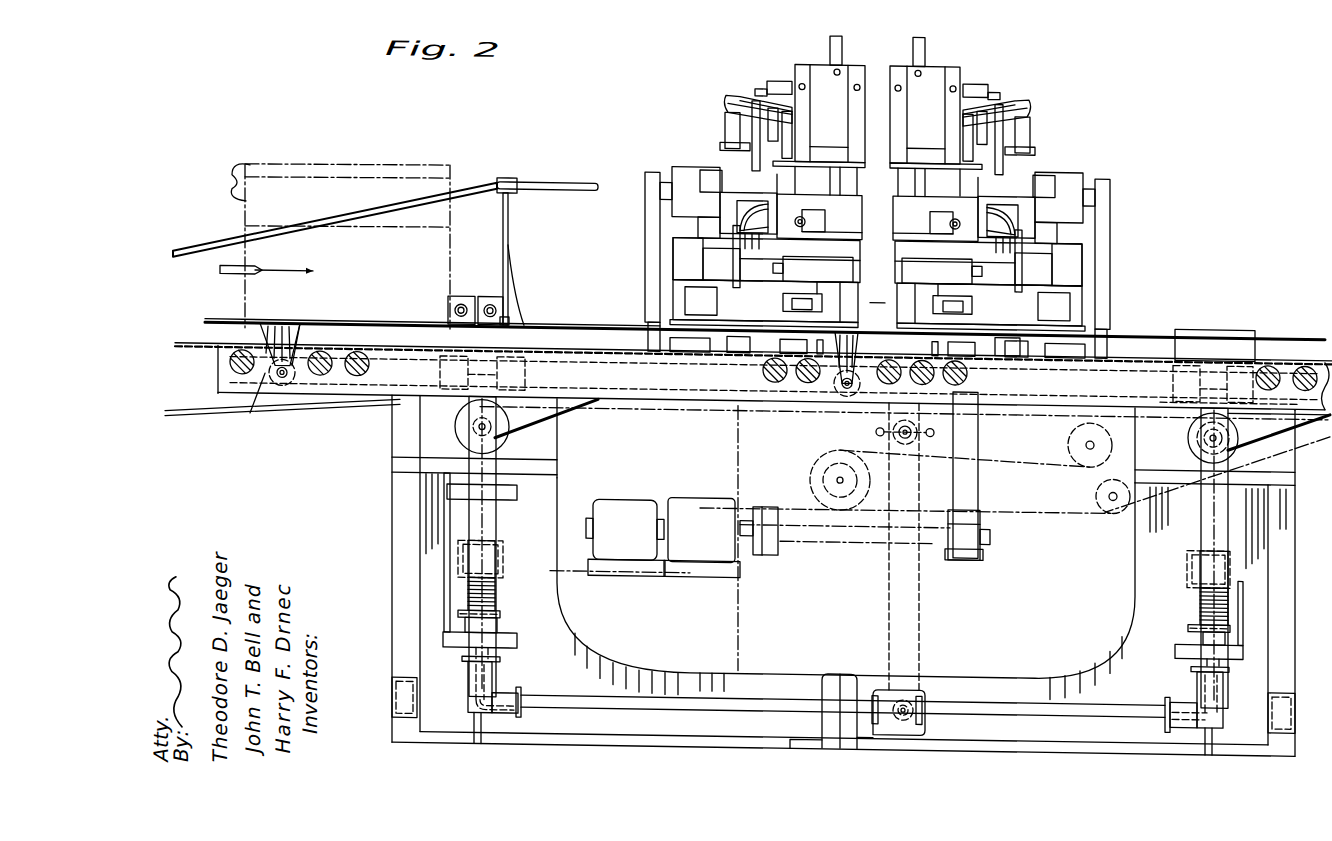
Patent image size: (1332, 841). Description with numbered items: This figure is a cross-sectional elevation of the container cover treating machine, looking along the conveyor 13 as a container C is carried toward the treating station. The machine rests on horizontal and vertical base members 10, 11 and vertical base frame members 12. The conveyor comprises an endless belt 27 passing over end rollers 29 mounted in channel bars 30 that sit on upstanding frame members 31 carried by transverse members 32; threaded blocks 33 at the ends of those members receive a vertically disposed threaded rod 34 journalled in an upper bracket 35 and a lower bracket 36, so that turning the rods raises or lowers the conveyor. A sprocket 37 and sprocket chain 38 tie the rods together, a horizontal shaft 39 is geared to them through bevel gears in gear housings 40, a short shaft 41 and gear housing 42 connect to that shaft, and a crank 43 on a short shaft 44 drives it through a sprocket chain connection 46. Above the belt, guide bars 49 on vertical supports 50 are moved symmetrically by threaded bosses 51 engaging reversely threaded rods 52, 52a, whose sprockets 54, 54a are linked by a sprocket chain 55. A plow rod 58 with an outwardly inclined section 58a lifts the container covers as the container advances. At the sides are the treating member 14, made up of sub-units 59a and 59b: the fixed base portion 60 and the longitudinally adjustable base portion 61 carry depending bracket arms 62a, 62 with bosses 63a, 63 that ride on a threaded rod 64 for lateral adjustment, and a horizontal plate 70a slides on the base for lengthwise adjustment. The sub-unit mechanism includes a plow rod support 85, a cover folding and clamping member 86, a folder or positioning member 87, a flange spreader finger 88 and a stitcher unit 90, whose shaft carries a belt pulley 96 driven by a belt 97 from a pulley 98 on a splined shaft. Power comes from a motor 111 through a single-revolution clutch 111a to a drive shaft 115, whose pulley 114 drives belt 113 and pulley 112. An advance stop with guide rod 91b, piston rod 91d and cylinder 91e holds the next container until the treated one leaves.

The base member 10 is at (417, 684).
The base member 11 is at (1040, 670).
The vertical base frame member 12 is at (555, 479).
The conveyor 13 is at (190, 348).
The unitary treating member 14 is at (878, 55).
The endless belt 27 is at (203, 416).
The end roller 29 is at (325, 383).
The channel bar 30 is at (632, 404).
The upstanding frame member 31 is at (534, 418).
The transverse member 32 is at (503, 563).
The interiorly threaded block 33 is at (462, 546).
The threaded rod 34 is at (498, 600).
The upper bracket 35 is at (510, 502).
The lower bracket 36 is at (1175, 643).
The sprocket 37 is at (1215, 655).
The sprocket chain 38 is at (500, 621).
The horizontal shaft 39 is at (762, 704).
The gear housing 40 is at (493, 680).
The short shaft 41 is at (925, 698).
The gear housing 42 is at (925, 725).
The crank 43 is at (1040, 433).
The short shaft 44 is at (920, 452).
The sprocket chain connection 46 is at (930, 600).
The guide bar 49 is at (420, 328).
The vertically extending support 50 is at (300, 333).
The interiorly threaded boss 51 is at (270, 385).
The reversely threaded rod 52 is at (282, 392).
The threaded rod 52a is at (847, 395).
The sprocket 54 is at (300, 360).
The sprocket 54a is at (808, 388).
The sprocket chain 55 is at (700, 405).
The plow rod 58 is at (565, 185).
The outwardly inclined section 58a is at (230, 255).
The sub-unit 59a is at (712, 93).
The sub-unit 59b is at (1040, 92).
The base portion 60 is at (1220, 323).
The base portion 61 is at (518, 345).
The depending bracket arm 62 is at (1180, 381).
The depending bracket arm 62a is at (460, 420).
The boss 63 is at (1190, 420).
The boss 63a is at (462, 436).
The threaded rod 64 is at (1195, 440).
The horizontal plate 70a is at (752, 321).
The plow rod support 85 is at (512, 225).
The cover folding and clamping member 86 is at (805, 62).
The folder or positioning member 87 is at (728, 190).
The flange spreader finger 88 is at (823, 218).
The stitcher unit 90 is at (775, 80).
The guide rod 91b is at (500, 308).
The piston rod 91d is at (462, 306).
The cylinder 91e is at (448, 302).
The belt pulley 96 is at (1110, 188).
The belt 97 is at (1110, 236).
The pulley 98 is at (1112, 334).
The motor 111 is at (645, 500).
The single-revolution solenoid-actuated clutch 111a is at (765, 553).
The pulley 112 is at (1008, 351).
The belt 113 is at (980, 492).
The pulley 114 is at (985, 554).
The drive shaft 115 is at (935, 538).
The container C is at (352, 170).